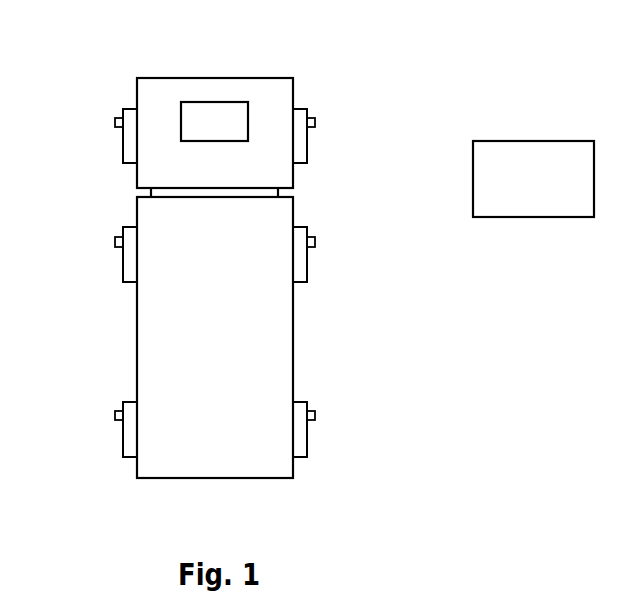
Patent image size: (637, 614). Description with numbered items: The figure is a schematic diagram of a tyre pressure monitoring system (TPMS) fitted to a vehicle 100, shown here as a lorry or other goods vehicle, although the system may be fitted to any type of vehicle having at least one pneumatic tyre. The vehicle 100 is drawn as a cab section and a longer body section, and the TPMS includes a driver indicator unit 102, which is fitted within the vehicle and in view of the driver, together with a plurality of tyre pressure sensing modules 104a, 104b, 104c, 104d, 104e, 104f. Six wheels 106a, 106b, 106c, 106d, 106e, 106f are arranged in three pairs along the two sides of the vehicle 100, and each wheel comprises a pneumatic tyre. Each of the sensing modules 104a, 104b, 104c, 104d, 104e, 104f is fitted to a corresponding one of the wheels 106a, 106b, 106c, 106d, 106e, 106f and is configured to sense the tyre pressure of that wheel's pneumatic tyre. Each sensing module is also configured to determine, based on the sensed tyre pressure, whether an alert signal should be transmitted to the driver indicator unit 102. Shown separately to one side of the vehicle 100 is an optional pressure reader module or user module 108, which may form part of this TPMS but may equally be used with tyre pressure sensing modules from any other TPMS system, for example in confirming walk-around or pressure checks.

The vehicle 100 is at (215, 337).
The driver indicator unit 102 is at (244, 100).
The tyre pressure sensing module 104a is at (113, 119).
The tyre pressure sensing module 104b is at (317, 119).
The tyre pressure sensing module 104c is at (113, 238).
The tyre pressure sensing module 104d is at (317, 238).
The tyre pressure sensing module 104e is at (113, 411).
The tyre pressure sensing module 104f is at (317, 406).
The wheel 106a is at (120, 152).
The wheel 106b is at (310, 150).
The wheel 106c is at (120, 269).
The wheel 106d is at (310, 268).
The wheel 106e is at (120, 443).
The wheel 106f is at (310, 438).
The pressure reader module or user module 108 is at (533, 179).